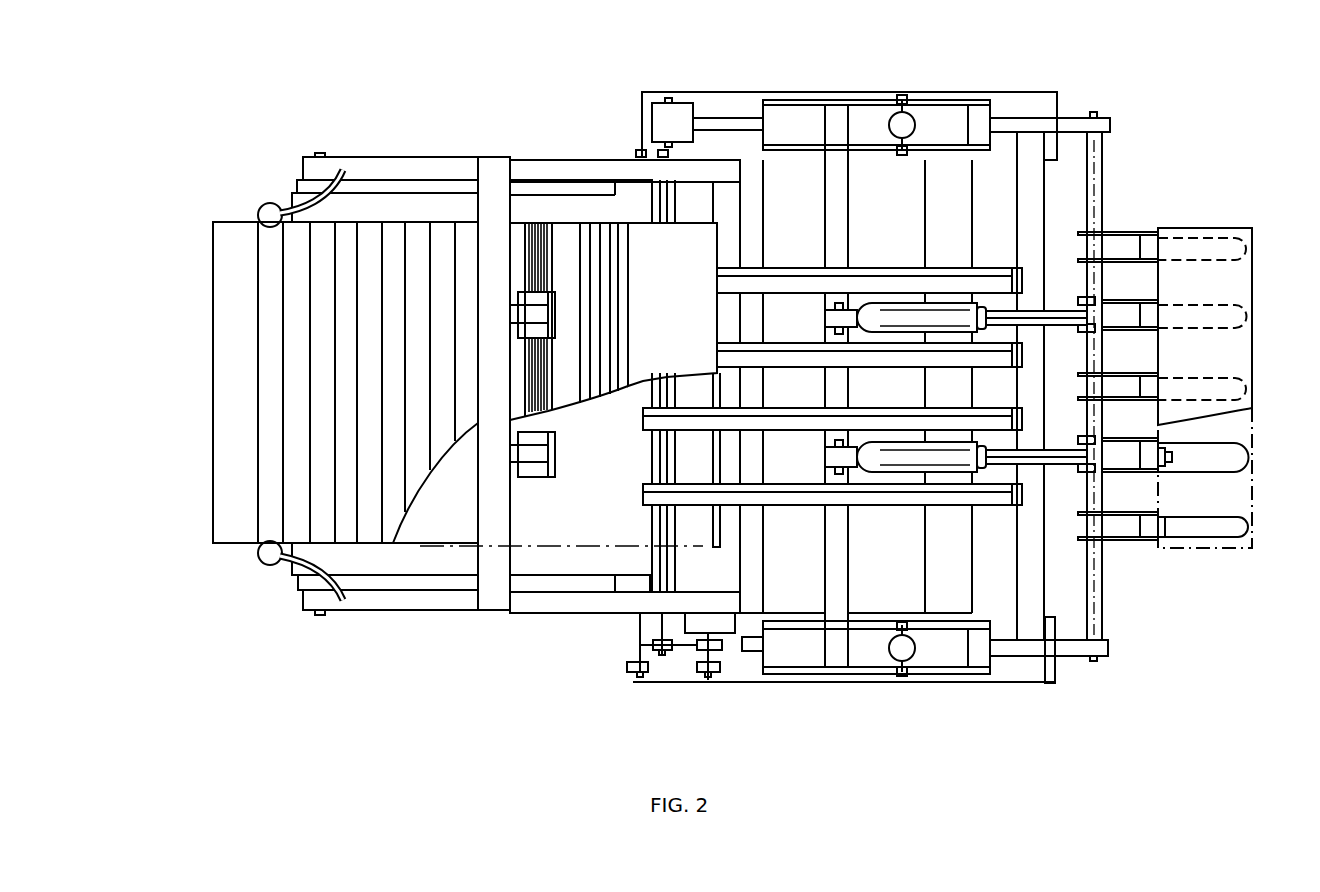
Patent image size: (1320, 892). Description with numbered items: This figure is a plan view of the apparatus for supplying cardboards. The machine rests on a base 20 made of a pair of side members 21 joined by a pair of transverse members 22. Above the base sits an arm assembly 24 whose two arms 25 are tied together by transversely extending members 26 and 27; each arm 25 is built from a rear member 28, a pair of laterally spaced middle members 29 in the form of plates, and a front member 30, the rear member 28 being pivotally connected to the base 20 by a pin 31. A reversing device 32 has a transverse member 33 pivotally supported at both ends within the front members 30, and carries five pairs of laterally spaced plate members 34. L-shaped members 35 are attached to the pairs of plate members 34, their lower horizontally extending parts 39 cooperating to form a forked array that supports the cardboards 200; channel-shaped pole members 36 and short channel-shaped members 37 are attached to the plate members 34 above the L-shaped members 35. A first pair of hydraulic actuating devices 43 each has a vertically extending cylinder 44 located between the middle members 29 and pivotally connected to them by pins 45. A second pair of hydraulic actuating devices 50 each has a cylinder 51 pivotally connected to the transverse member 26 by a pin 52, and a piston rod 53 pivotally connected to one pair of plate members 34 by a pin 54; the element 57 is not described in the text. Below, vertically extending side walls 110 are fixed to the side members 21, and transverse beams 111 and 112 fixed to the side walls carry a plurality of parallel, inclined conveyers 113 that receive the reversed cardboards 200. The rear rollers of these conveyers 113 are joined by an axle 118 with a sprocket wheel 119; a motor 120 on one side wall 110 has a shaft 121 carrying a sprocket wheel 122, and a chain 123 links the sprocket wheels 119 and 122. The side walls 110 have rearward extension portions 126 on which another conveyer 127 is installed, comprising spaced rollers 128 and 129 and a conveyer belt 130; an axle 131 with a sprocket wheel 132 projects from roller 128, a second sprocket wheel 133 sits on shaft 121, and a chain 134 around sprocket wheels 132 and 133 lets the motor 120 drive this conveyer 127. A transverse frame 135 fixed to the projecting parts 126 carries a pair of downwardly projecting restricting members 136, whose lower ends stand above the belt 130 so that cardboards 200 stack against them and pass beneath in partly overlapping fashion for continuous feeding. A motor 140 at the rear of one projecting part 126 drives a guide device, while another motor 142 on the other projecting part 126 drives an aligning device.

The base 20 is at (797, 90).
The side member 21 is at (965, 100).
The transverse member 22 is at (760, 546).
The arm assembly 24 is at (1073, 660).
The arm 25 is at (1038, 118).
The transversely extending member 26 is at (850, 196).
The transversely extending member 27 is at (1013, 208).
The rear member 28 is at (735, 110).
The middle member 29 is at (845, 105).
The front member 30 is at (1017, 118).
The pin 31 is at (672, 102).
The reversing device 32 is at (1112, 583).
The transverse member 33 is at (1105, 630).
The plate member 34 is at (1122, 400).
The L-shaped member 35 is at (1248, 470).
The pole member 36 is at (1162, 525).
The short channel-shaped member 37 is at (1165, 470).
The lower horizontally extending part 39 is at (1240, 530).
The first hydraulic actuating device 43 is at (910, 112).
The cylinder 44 is at (893, 640).
The pin 45 is at (903, 628).
The second hydraulic actuating device 50 is at (908, 318).
The cylinder 51 is at (875, 303).
The pin 52 is at (840, 333).
The piston rod 53 is at (1056, 311).
The pin 54 is at (1092, 332).
The stop 57 is at (1170, 462).
The side wall 110 is at (742, 180).
The transverse beam 111 is at (655, 522).
The transverse beam 112 is at (742, 518).
The conveyer 113 is at (778, 270).
The axle 118 is at (660, 445).
The sprocket wheel 119 is at (640, 645).
The motor 120 is at (760, 645).
The shaft 121 is at (708, 678).
The sprocket wheel 122 is at (722, 634).
The chain 123 is at (662, 655).
The extension portion 126 is at (372, 158).
The conveyer 127 is at (432, 580).
The roller 128 is at (622, 583).
The roller 129 is at (345, 602).
The conveyer belt 130 is at (462, 568).
The axle 131 is at (625, 595).
The sprocket wheel 132 is at (636, 670).
The sprocket wheel 133 is at (697, 650).
The chain 134 is at (640, 676).
The frame 135 is at (478, 512).
The restricting member 136 is at (558, 292).
The motor 140 is at (258, 545).
The motor 142 is at (266, 204).
The cardboard 200 is at (640, 232).